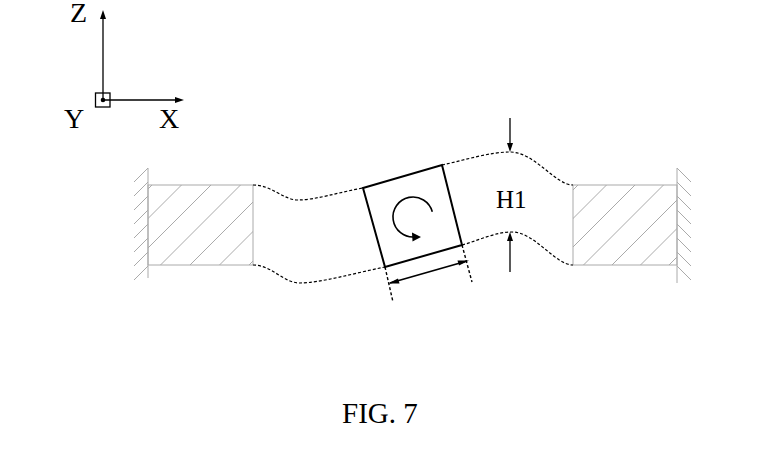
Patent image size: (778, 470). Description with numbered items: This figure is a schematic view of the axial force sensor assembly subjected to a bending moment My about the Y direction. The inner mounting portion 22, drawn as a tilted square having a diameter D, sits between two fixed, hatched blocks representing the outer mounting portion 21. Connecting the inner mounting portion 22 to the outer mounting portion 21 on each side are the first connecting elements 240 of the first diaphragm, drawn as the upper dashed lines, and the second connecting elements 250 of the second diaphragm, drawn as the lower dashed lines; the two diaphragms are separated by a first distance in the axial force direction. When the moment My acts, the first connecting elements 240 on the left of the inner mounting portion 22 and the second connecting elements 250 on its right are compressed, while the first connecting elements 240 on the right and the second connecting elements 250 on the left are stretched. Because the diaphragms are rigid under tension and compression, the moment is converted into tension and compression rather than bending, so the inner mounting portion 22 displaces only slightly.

The outer mounting portion 21 is at (625, 220).
The inner mounting portion 22 is at (418, 190).
The first connecting elements 240 is at (298, 200).
The second connecting elements 250 is at (292, 278).